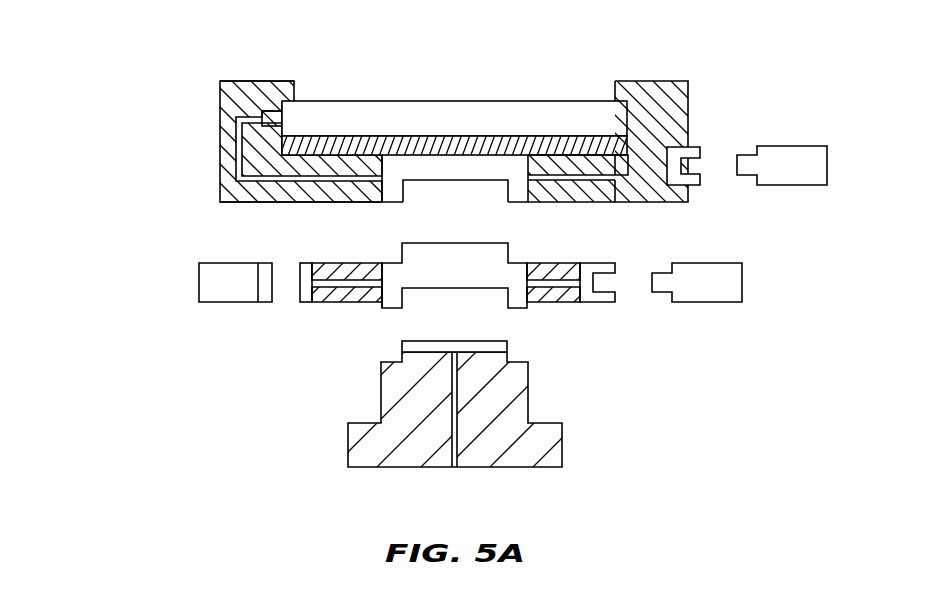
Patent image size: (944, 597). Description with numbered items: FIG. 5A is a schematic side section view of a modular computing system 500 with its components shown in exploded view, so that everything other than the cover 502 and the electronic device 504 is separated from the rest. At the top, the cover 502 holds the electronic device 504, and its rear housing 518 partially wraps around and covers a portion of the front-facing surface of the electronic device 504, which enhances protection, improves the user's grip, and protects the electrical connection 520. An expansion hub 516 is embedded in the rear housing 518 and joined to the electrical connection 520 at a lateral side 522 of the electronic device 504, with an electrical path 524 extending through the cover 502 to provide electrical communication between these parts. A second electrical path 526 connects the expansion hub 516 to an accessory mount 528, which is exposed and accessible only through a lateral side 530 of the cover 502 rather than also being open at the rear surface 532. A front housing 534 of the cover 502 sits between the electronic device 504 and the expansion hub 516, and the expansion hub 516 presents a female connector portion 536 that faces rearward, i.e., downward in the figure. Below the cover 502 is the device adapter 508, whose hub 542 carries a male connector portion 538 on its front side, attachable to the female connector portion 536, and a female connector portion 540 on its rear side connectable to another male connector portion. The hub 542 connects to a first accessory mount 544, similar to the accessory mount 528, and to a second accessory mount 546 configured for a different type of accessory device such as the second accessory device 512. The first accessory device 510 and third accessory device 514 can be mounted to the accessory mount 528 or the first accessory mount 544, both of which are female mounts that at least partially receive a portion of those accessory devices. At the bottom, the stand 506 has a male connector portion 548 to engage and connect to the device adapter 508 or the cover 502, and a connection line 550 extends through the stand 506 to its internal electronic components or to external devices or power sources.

The system 500 is at (141, 45).
The cover 502 is at (216, 90).
The electronic device 504 is at (399, 100).
The stand 506 is at (344, 446).
The device adapter 508 is at (329, 308).
The first accessory device 510 is at (817, 189).
The second accessory device 512 is at (208, 305).
The third accessory device 514 is at (720, 306).
The expansion hub 516 is at (385, 202).
The rear housing 518 is at (648, 192).
The electrical connection 520 is at (262, 116).
The lateral side 522 is at (248, 81).
The electrical path 524 is at (238, 160).
The second electrical path 526 is at (627, 203).
The accessory mount 528 is at (698, 147).
The lateral side 530 is at (690, 103).
The rear surface 532 is at (250, 203).
The front housing 534 is at (500, 140).
The female connector portion 536 is at (437, 199).
The male connector portion 538 is at (487, 243).
The female connector portion 540 is at (473, 290).
The hub 542 is at (392, 307).
The first accessory mount 544 is at (598, 304).
The second accessory mount 546 is at (305, 305).
The male connector portion 548 is at (455, 341).
The connection line 550 is at (453, 437).